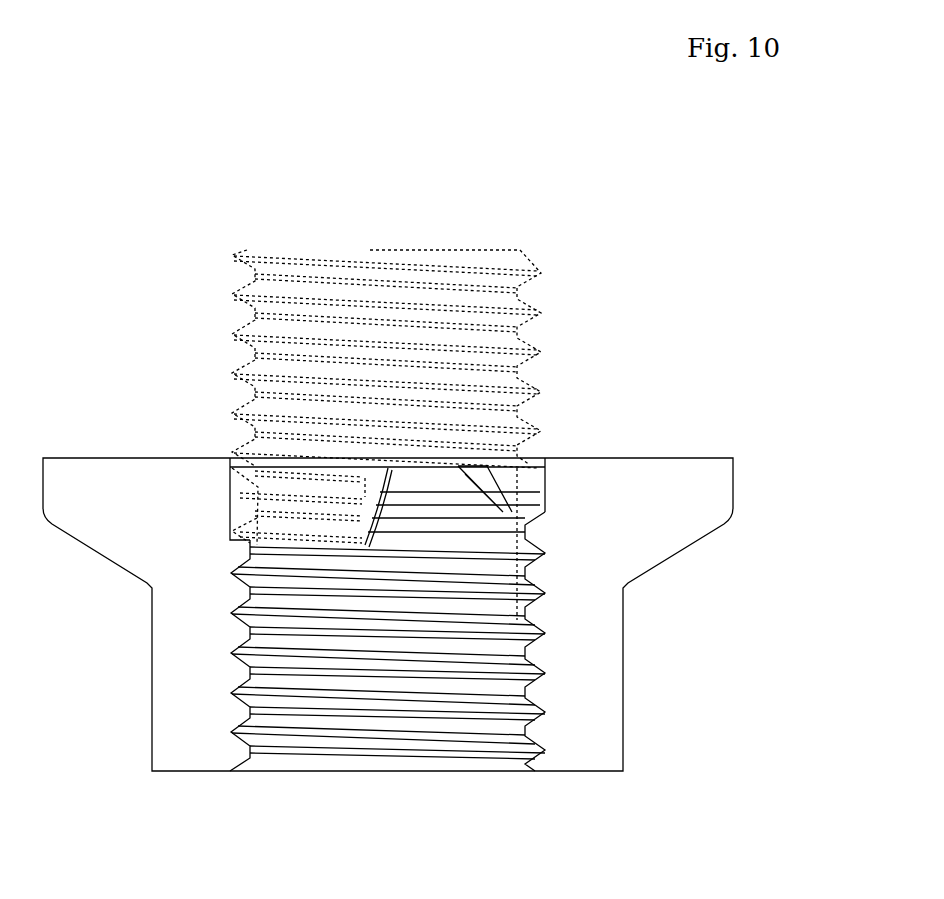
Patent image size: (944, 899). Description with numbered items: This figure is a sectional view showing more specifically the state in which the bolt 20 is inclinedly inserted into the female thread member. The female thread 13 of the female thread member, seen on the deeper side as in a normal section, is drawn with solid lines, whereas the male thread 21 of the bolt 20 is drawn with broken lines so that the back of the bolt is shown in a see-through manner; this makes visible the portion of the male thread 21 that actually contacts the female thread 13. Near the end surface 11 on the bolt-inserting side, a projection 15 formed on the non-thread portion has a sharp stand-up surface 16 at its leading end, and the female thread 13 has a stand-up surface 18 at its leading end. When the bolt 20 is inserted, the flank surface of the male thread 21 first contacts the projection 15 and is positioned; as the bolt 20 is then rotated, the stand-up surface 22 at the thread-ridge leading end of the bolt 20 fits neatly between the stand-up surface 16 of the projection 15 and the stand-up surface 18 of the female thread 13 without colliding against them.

The end surface 11 is at (133, 472).
The female thread 13 is at (434, 575).
The projection 15 is at (450, 470).
The stand-up surface 16 is at (388, 468).
The stand-up surface 18 is at (224, 649).
The bolt 20 is at (412, 275).
The male thread 21 is at (563, 424).
The stand-up surface 22 is at (204, 571).